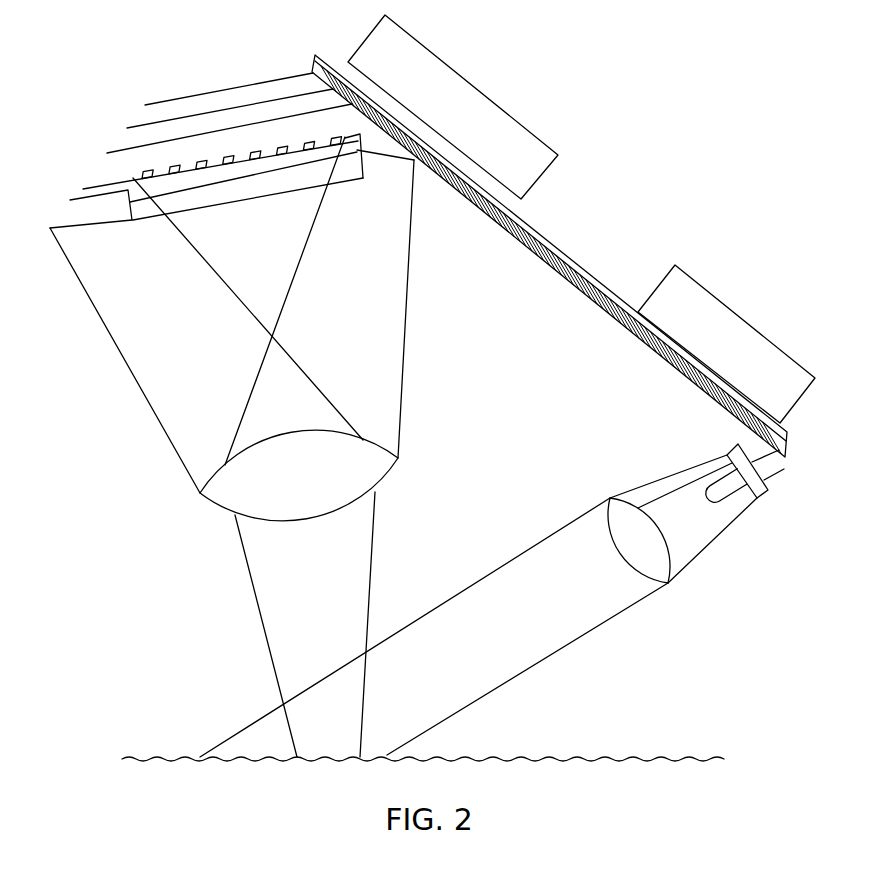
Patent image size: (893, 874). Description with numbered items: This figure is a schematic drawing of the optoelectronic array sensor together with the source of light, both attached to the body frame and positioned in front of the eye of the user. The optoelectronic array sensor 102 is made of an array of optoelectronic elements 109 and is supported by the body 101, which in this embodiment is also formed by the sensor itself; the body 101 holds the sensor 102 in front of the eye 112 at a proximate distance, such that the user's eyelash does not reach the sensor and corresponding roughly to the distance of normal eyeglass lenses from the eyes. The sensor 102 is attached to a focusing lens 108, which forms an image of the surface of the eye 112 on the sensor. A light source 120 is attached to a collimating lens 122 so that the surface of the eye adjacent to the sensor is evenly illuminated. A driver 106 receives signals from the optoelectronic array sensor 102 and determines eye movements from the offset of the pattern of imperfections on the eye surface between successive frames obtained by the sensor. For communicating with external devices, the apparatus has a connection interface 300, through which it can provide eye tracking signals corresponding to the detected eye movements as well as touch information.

The body 101 is at (568, 258).
The optoelectronic array sensor 102 is at (147, 218).
The driver 106 is at (472, 83).
The focusing lens 108 is at (209, 505).
The light receiving elements 109 is at (253, 153).
The eye 112 is at (545, 757).
The light source 120 is at (713, 477).
The collimating lens 122 is at (608, 502).
The connection interface 300 is at (745, 318).